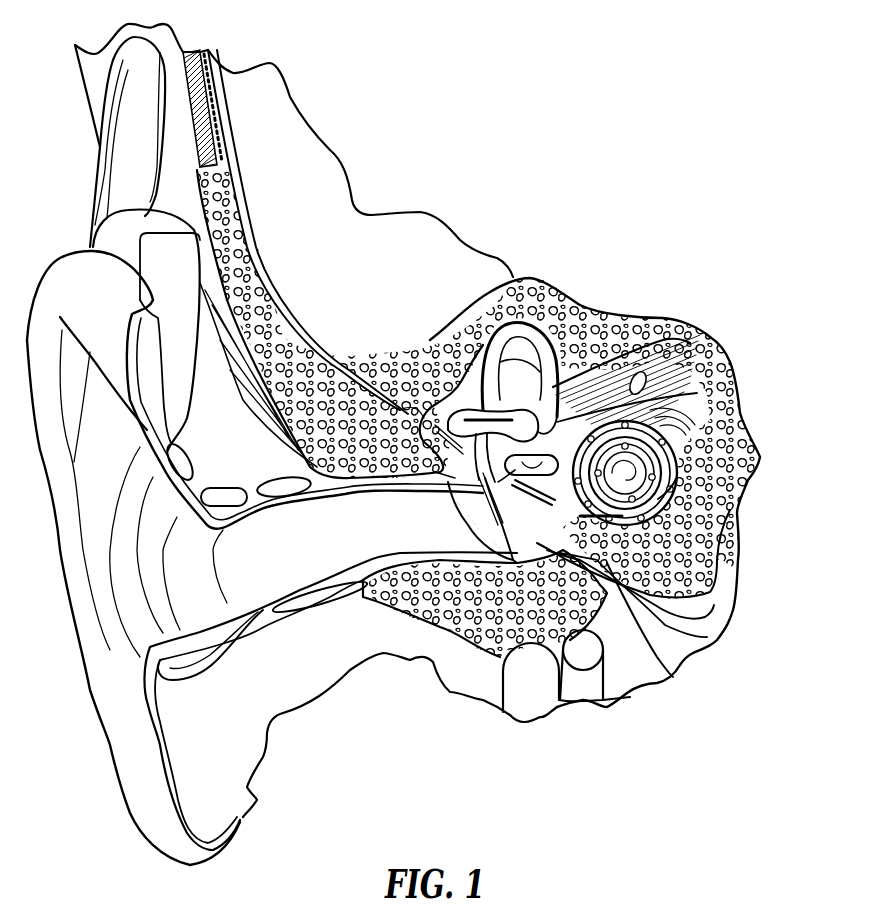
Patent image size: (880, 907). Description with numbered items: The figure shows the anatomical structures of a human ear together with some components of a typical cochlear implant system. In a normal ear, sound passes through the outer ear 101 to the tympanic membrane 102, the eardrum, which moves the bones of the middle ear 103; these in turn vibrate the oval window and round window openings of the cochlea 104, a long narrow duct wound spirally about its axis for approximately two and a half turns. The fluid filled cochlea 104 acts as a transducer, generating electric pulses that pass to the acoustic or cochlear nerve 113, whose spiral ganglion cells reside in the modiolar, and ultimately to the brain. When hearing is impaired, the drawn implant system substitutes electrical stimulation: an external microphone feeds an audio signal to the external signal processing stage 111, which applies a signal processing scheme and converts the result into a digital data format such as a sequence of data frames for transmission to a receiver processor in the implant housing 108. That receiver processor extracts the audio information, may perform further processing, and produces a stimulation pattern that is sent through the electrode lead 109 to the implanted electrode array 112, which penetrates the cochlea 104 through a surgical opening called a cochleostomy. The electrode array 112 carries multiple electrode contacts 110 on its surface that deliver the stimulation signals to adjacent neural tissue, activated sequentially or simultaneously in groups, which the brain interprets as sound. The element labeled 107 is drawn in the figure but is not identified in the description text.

The outer ear 101 is at (121, 451).
The tympanic membrane 102 is at (485, 538).
The middle ear 103 is at (498, 478).
The cochlea 104 is at (623, 470).
The ear helix root 107 is at (130, 167).
The implant housing 108 is at (207, 97).
The electrode lead 109 is at (323, 370).
The electrode contacts 110 is at (667, 490).
The external signal processing stage 111 is at (123, 245).
The electrode array 112 is at (623, 515).
The acoustic nerve 113 is at (640, 372).